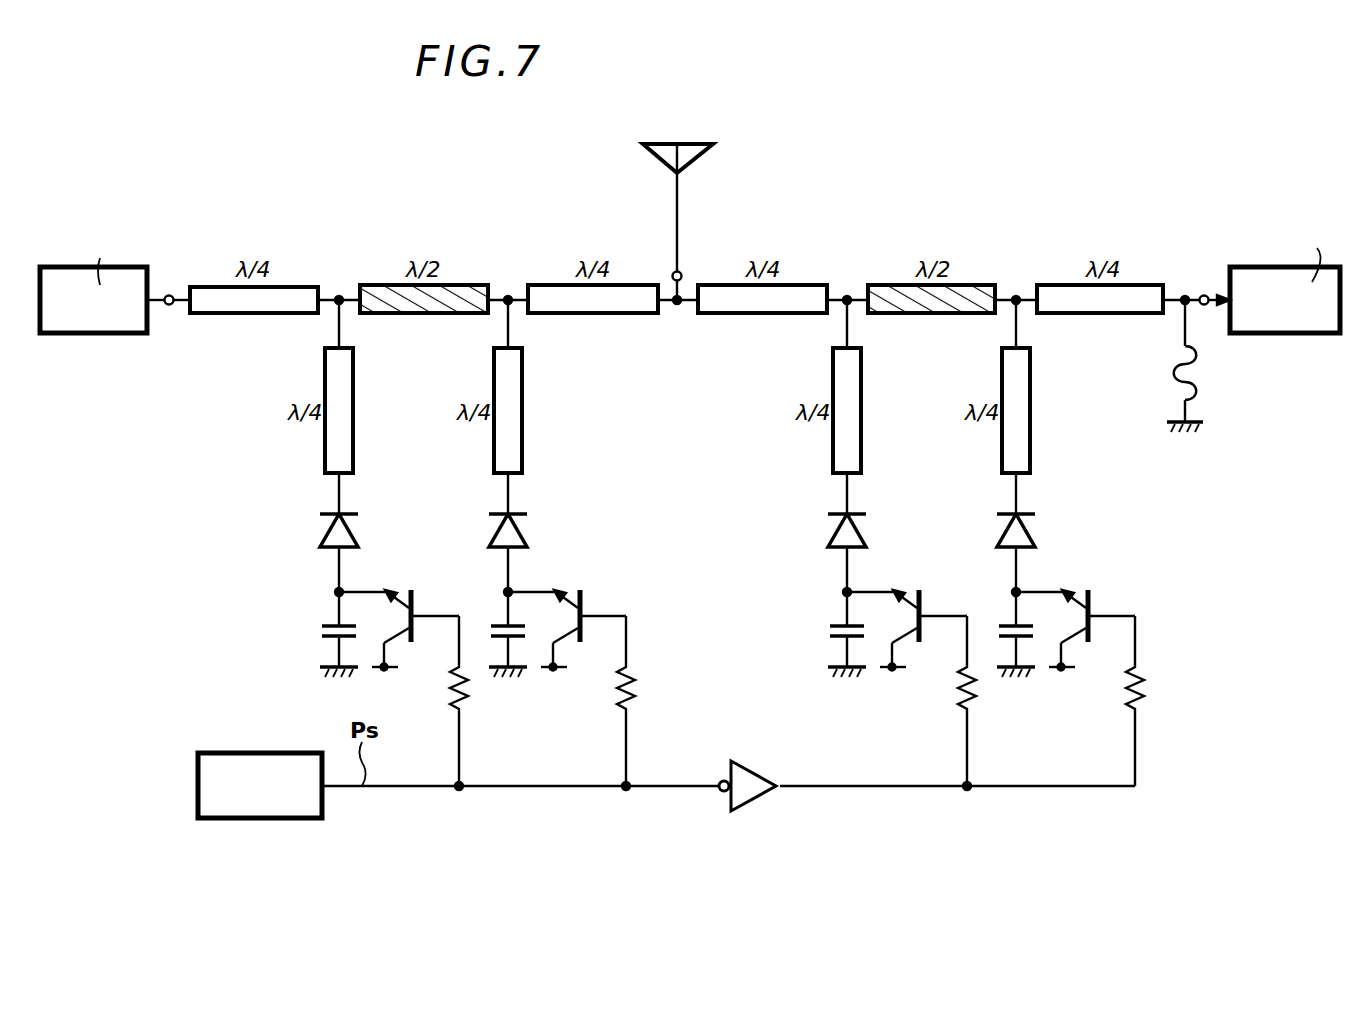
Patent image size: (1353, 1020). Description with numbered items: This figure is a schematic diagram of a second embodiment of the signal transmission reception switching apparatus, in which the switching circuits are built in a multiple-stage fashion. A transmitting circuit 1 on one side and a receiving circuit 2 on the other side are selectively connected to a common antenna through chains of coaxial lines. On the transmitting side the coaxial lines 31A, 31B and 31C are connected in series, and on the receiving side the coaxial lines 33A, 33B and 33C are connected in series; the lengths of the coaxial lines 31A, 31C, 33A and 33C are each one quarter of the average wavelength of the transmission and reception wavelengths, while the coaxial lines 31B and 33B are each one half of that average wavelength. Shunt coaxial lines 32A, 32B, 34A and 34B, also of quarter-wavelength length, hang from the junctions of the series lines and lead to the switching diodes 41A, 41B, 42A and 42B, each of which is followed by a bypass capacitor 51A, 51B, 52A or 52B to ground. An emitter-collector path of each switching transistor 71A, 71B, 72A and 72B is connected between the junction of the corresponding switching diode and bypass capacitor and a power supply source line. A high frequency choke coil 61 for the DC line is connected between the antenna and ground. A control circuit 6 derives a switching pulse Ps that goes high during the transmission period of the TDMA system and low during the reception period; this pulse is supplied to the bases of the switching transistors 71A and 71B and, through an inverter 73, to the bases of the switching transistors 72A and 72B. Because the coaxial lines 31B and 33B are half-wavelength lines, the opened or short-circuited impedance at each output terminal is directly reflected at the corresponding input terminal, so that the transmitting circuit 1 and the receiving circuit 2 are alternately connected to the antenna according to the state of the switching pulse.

The transmitting circuit 1 is at (90, 333).
The receiving circuit 2 is at (1295, 333).
The control circuit 6 is at (248, 818).
The coaxial line 31A is at (247, 313).
The coaxial line 31B is at (423, 313).
The coaxial line 31C is at (590, 313).
The coaxial line 33A is at (760, 313).
The coaxial line 33B is at (930, 313).
The coaxial line 33C is at (1100, 313).
The coaxial line 32A is at (353, 412).
The coaxial line 32B is at (522, 412).
The coaxial line 34A is at (861, 412).
The coaxial line 34B is at (1030, 412).
The switching diode 41A is at (350, 532).
The switching diode 41B is at (519, 532).
The switching diode 42A is at (858, 532).
The switching diode 42B is at (1027, 532).
The bypass capacitor 51A is at (325, 626).
The bypass capacitor 51B is at (498, 626).
The bypass capacitor 52A is at (833, 626).
The bypass capacitor 52B is at (1008, 626).
The high frequency choke coil 61 is at (1196, 374).
The switching transistor 71A is at (418, 643).
The switching transistor 71B is at (587, 643).
The switching transistor 72A is at (926, 643).
The switching transistor 72B is at (1095, 643).
The inverter 73 is at (748, 808).